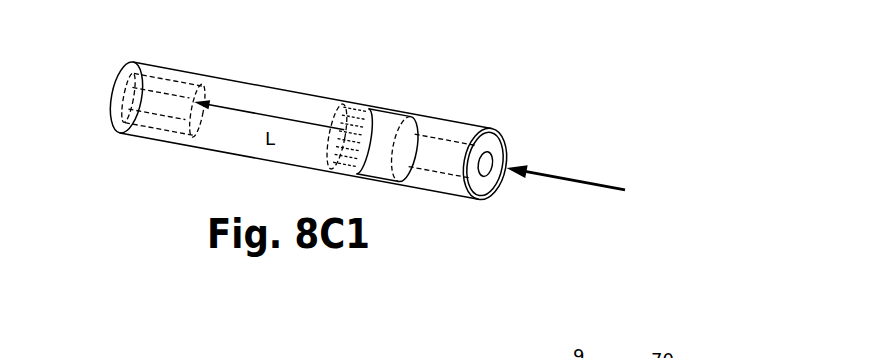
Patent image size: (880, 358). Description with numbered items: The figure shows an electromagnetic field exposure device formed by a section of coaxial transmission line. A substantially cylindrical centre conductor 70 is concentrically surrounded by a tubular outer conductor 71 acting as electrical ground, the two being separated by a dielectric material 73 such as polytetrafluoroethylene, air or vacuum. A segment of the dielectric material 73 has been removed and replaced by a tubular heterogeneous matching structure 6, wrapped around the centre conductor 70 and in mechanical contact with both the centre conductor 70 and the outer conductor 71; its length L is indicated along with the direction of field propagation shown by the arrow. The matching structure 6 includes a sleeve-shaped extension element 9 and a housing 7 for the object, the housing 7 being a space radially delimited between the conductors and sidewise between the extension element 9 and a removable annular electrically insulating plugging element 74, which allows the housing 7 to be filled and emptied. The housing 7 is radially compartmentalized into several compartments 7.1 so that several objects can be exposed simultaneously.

The heterogeneous matching structure 6 is at (223, 170).
The housing 7 is at (376, 126).
The compartments 7.1 is at (362, 105).
The extension element 9 is at (263, 107).
The centre conductor 70 is at (115, 97).
The tubular outer conductor 71 is at (133, 65).
The dielectric material 73 is at (135, 80).
The plugging element 74 is at (377, 153).